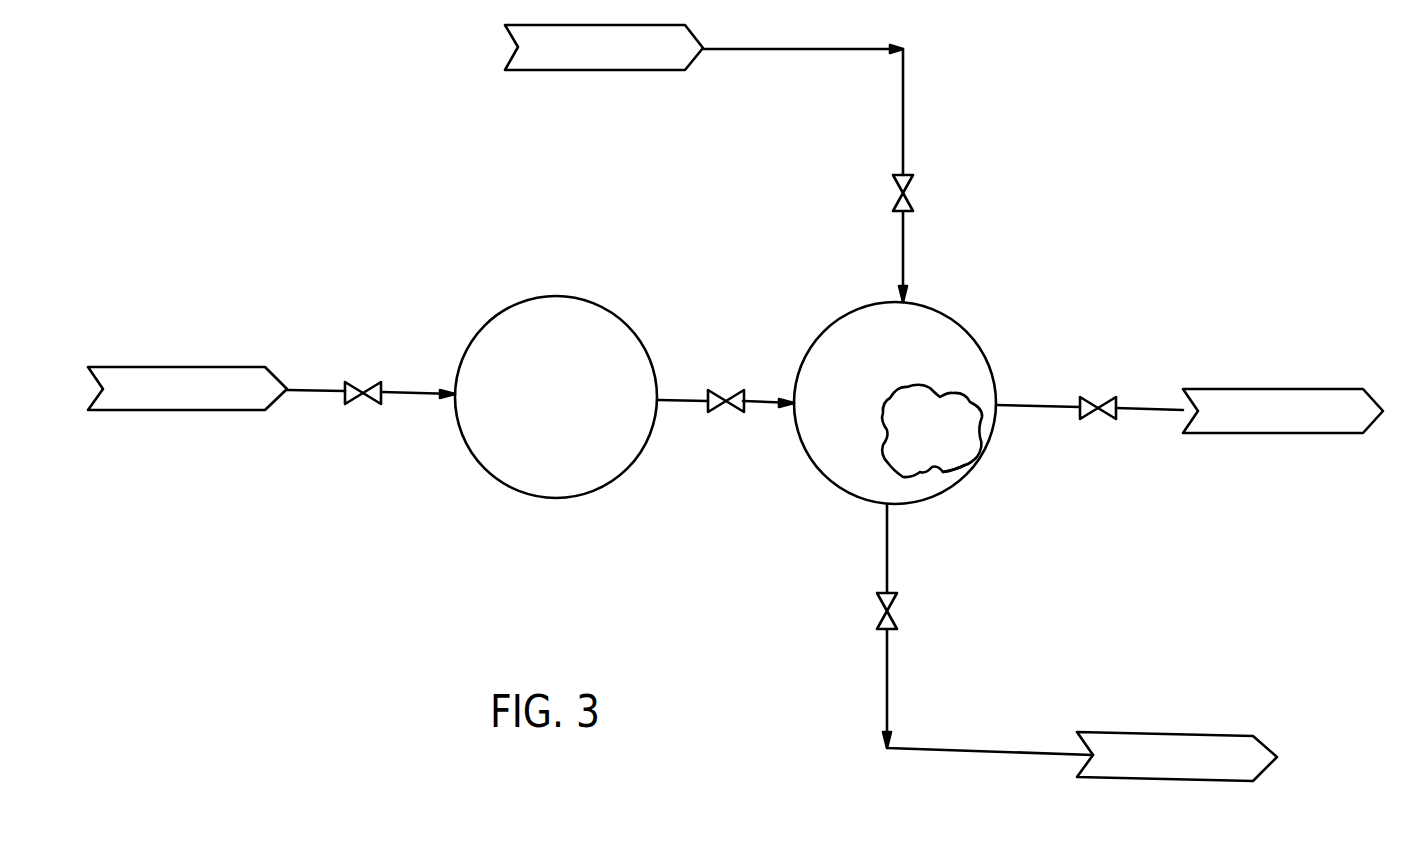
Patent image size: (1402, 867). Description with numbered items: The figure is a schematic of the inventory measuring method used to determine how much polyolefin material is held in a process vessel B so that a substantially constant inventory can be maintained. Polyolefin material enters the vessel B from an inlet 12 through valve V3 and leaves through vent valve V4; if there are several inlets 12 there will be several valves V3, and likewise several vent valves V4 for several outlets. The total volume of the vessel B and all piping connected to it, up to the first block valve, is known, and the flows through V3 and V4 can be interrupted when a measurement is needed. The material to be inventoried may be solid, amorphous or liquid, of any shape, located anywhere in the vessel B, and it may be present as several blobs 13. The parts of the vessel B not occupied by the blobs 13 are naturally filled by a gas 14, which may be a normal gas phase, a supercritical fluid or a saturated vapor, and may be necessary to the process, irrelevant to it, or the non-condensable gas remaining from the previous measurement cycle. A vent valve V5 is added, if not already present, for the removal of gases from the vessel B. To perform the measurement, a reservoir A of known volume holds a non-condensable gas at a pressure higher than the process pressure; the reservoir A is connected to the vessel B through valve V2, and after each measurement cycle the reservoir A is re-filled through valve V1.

The inlet 12 is at (618, 71).
The blobs 13 is at (950, 403).
The gas 14 is at (837, 342).
The reservoir A is at (588, 496).
The vessel B is at (978, 458).
The valve V1 is at (365, 377).
The valve V2 is at (729, 384).
The valve V3 is at (923, 195).
The vent valve V4 is at (907, 612).
The vent valve V5 is at (1100, 392).